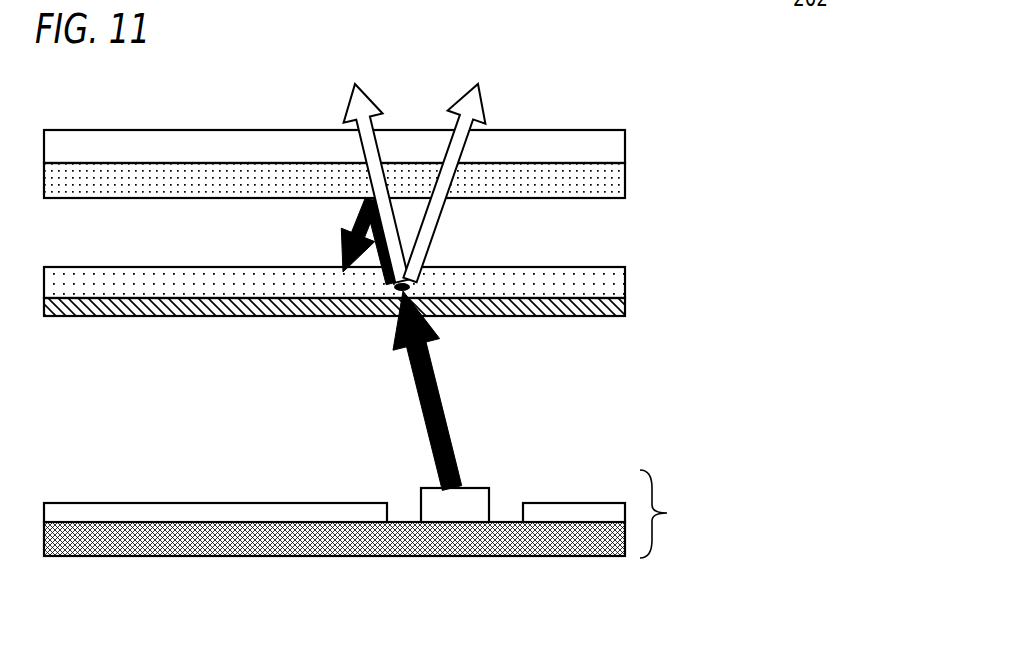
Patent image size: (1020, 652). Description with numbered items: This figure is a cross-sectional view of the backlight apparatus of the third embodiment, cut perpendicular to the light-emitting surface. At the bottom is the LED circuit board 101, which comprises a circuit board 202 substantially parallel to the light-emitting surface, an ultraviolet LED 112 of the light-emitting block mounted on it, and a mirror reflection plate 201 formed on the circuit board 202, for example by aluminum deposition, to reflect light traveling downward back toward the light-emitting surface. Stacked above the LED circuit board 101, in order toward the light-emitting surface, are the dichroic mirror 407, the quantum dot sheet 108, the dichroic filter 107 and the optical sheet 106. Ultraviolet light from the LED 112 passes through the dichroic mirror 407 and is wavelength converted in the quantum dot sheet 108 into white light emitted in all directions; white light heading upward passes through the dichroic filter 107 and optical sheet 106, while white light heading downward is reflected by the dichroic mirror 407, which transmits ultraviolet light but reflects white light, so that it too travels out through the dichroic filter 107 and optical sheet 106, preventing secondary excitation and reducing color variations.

The optical sheet 106 is at (610, 150).
The dichroic filter 107 is at (610, 182).
The quantum dot sheet 108 is at (610, 285).
The dichroic mirror 407 is at (610, 310).
The LED circuit board 101 is at (676, 514).
The LED 112 is at (472, 498).
The mirror reflection plate 201 is at (78, 512).
The circuit board 202 is at (614, 543).